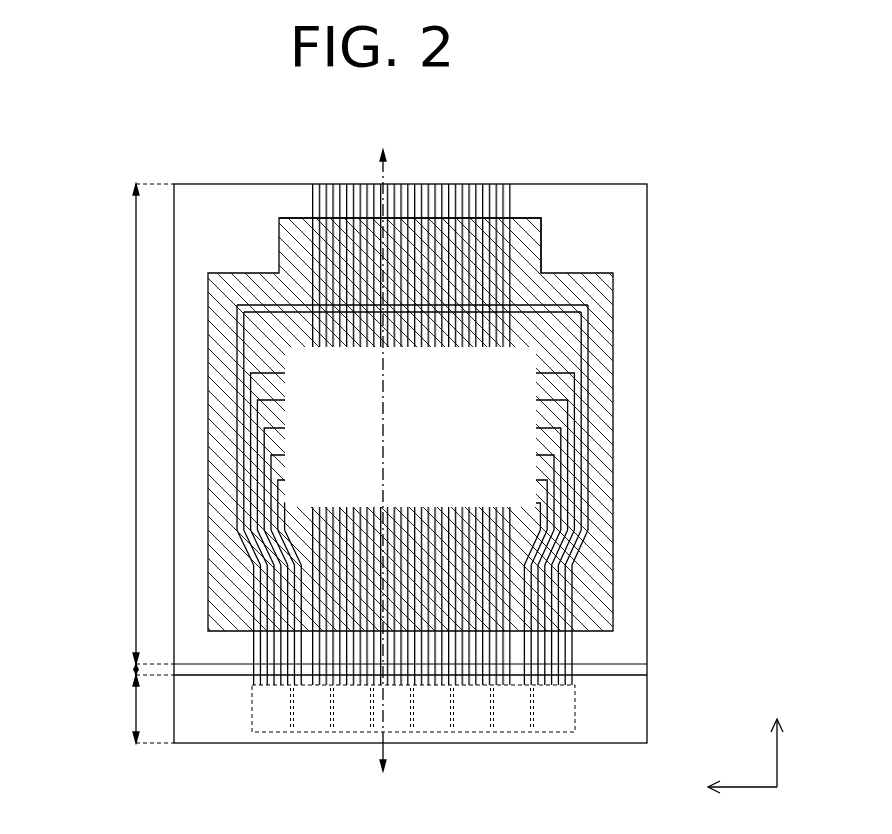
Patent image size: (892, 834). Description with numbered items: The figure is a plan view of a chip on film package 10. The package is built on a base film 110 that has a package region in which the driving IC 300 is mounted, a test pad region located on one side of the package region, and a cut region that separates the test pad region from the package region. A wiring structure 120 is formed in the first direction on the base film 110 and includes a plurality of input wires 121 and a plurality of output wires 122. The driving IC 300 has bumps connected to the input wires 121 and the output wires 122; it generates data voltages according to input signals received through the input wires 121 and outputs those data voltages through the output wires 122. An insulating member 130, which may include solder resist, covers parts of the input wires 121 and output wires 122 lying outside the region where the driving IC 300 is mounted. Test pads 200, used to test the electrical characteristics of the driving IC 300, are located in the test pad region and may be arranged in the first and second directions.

The COF package 10 is at (107, 137).
The base film 110 is at (596, 263).
The input wires 121 is at (497, 236).
The output wires 122 is at (500, 615).
The wiring structure 120 is at (586, 571).
The insulating member 130 is at (596, 595).
The driving IC 300 is at (590, 418).
The test pad 200 is at (265, 732).